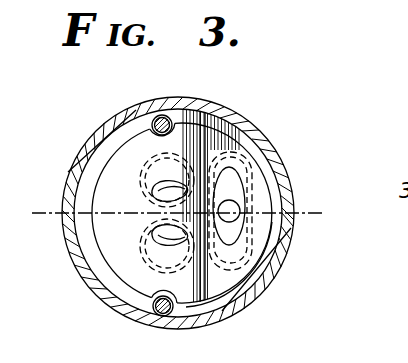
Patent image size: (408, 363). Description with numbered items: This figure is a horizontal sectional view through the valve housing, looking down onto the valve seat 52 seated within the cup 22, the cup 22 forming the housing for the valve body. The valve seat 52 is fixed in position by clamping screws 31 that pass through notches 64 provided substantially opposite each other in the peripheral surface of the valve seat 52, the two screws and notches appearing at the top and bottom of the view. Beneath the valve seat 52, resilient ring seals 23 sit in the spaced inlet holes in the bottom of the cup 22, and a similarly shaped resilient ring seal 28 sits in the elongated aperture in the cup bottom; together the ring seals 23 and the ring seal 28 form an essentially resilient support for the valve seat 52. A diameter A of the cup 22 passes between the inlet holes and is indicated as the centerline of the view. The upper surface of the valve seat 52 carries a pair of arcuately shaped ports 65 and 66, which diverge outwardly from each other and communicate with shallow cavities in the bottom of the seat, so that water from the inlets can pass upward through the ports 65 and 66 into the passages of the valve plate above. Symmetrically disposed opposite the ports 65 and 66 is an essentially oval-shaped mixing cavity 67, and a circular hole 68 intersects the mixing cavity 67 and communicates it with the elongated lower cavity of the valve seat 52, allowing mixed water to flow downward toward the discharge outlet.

The cup 22 is at (262, 141).
The resilient ring seals 23 is at (228, 100).
The resilient ring seal 28 is at (240, 268).
The clamping screws 31 is at (153, 116).
The valve seat 52 is at (121, 231).
The notches 64 is at (166, 115).
The arcuately shaped port 65 is at (160, 238).
The arcuately shaped port 66 is at (163, 188).
The mixing cavity 67 is at (232, 196).
The circular hole 68 is at (233, 219).
The diameter A is at (43, 213).